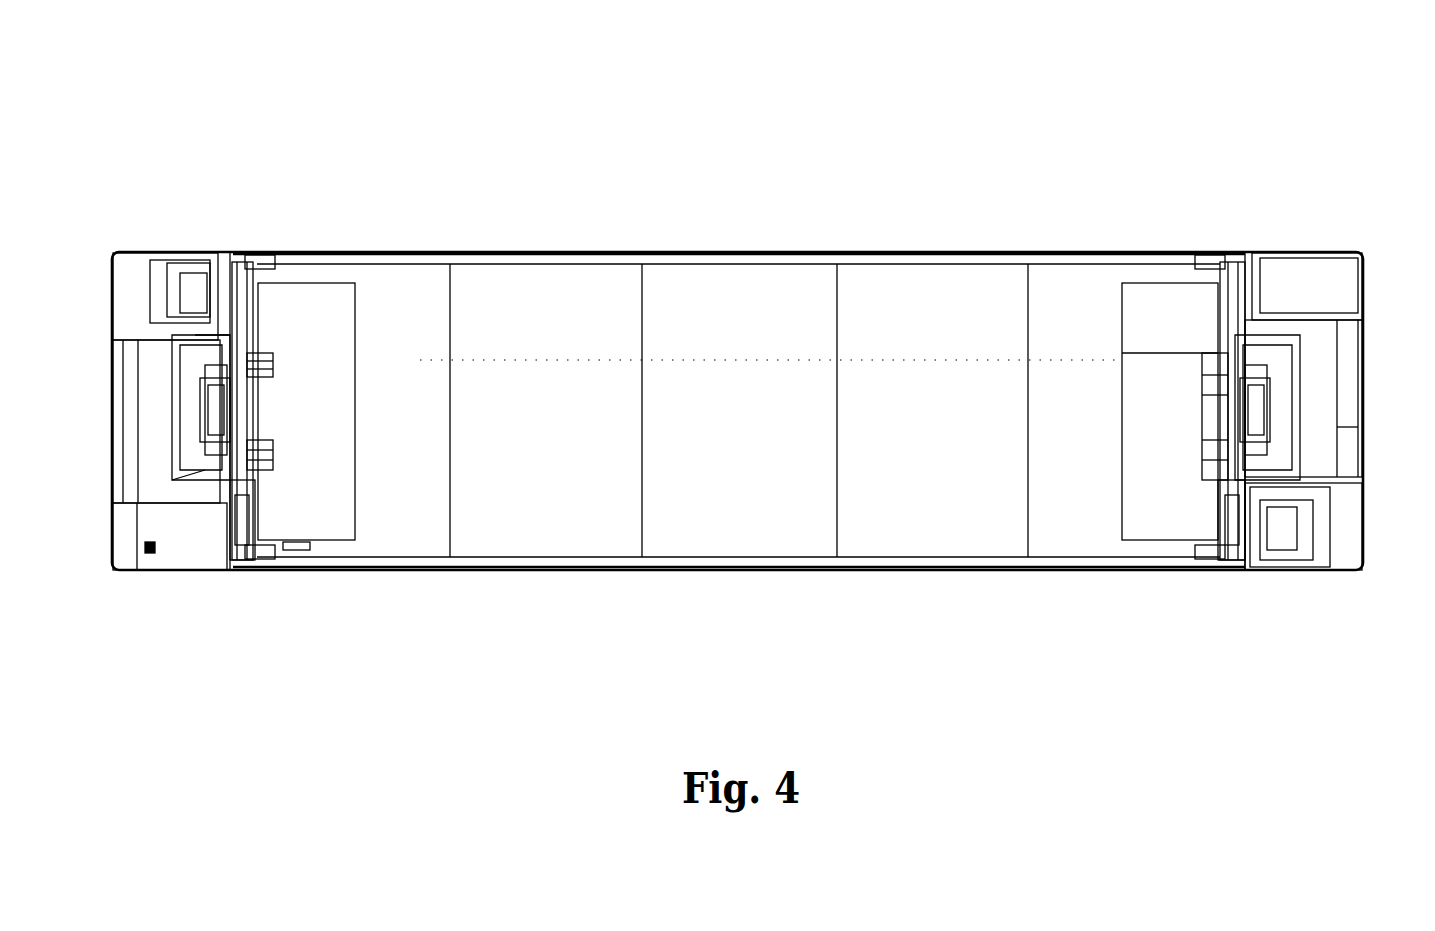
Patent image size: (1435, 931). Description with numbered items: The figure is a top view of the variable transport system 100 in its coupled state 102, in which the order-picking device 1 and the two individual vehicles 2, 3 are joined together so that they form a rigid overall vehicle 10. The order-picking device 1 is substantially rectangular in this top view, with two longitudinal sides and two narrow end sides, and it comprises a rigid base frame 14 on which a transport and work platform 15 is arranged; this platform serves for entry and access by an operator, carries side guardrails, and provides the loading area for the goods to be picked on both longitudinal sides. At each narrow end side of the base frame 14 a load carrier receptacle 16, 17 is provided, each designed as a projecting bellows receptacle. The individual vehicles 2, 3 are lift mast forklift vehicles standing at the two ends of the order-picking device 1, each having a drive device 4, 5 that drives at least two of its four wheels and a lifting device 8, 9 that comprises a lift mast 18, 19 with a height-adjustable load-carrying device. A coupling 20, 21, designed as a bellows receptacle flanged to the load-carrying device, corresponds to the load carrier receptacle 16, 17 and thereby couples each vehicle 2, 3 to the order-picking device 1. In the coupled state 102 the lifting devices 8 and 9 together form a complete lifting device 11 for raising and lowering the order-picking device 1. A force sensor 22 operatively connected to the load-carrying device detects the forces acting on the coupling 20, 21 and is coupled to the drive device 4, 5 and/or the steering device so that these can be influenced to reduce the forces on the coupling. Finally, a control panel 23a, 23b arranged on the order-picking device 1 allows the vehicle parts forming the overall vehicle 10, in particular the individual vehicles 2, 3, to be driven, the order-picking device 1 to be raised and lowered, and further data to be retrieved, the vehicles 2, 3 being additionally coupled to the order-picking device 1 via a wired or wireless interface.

The order-picking device 1 is at (733, 222).
The individual vehicle 2 is at (213, 222).
The individual vehicle 3 is at (1333, 220).
The drive device 4 is at (149, 562).
The drive device 5 is at (1294, 270).
The lifting device 8 is at (180, 457).
The lifting device 9 is at (1288, 390).
The overall vehicle 10 is at (465, 212).
The complete lifting device 11 is at (1137, 190).
The base frame 14 is at (808, 566).
The transport and work platform 15 is at (550, 526).
The load carrier receptacle 16 is at (281, 360).
The load carrier receptacle 17 is at (1193, 458).
The lift mast 18 is at (212, 397).
The lift mast 19 is at (1268, 436).
The coupling 20 is at (253, 470).
The coupling 21 is at (1210, 472).
The force sensor 22 is at (215, 421).
The control panel 23a is at (255, 256).
The control panel 23b is at (1206, 256).
The variable transport system 100 is at (826, 137).
The coupled state 102 is at (917, 137).